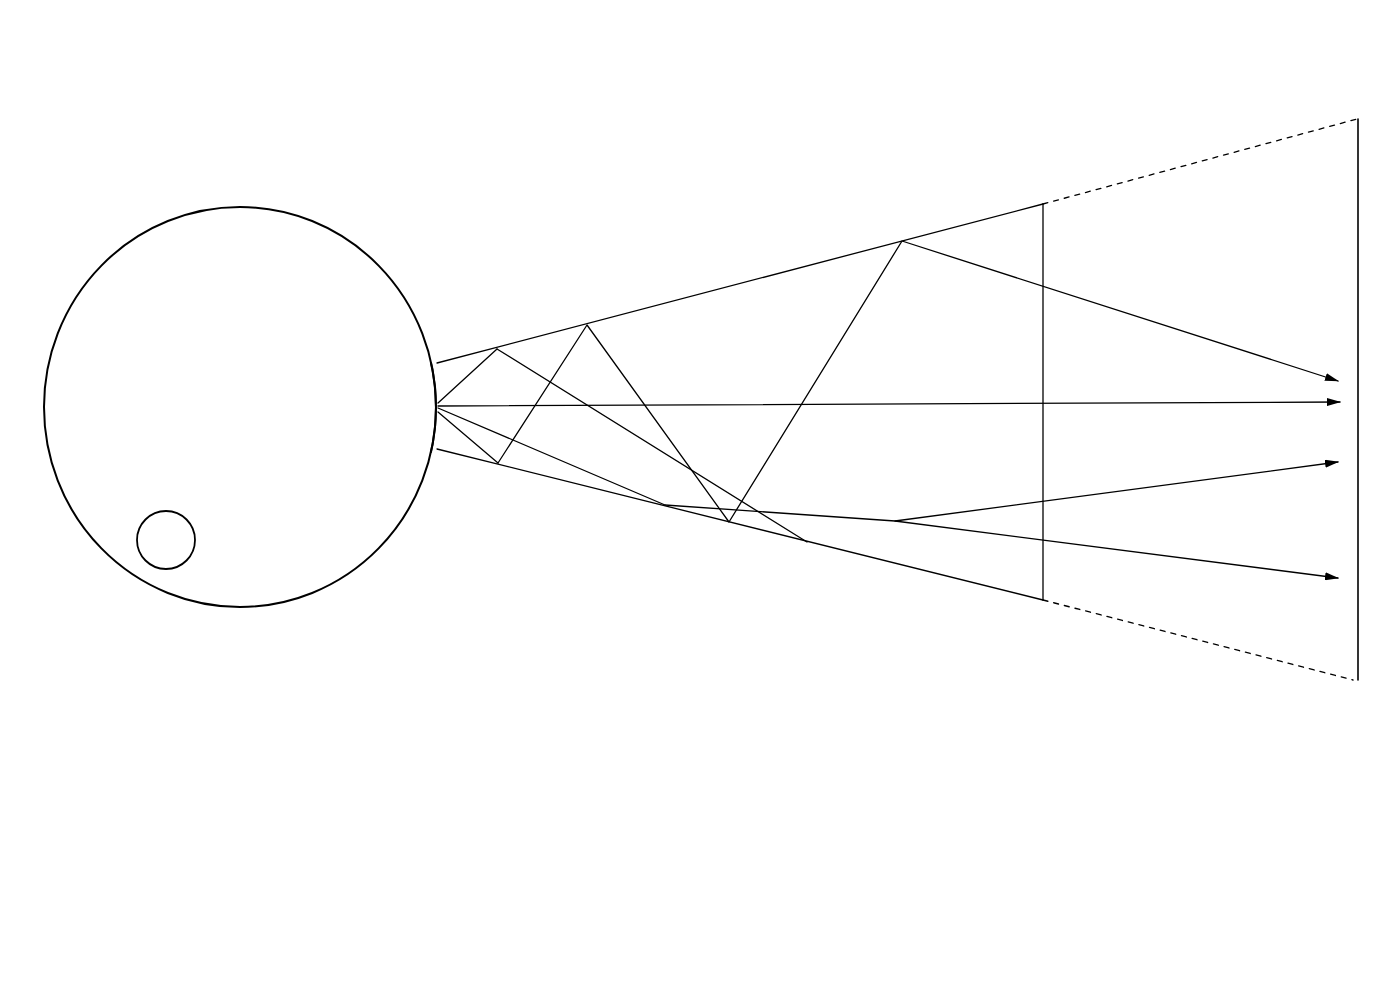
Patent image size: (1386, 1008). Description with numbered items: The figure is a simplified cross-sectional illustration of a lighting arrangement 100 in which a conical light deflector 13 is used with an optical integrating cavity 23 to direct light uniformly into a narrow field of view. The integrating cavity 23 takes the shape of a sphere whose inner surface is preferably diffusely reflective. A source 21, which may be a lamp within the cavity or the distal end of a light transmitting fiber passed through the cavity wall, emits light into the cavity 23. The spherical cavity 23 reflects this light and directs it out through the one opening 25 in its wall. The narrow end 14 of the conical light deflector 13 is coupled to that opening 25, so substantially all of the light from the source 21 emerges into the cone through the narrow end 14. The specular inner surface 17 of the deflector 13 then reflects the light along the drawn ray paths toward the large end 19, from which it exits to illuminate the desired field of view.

The display system 100 is at (470, 117).
The integrating cavity 23 is at (207, 207).
The source 21 is at (190, 562).
The narrow end 14 is at (445, 437).
The opening 25 is at (440, 392).
The conical light deflector 13 is at (722, 287).
The specular inner surface 17 is at (816, 264).
The large end 19 is at (1045, 580).